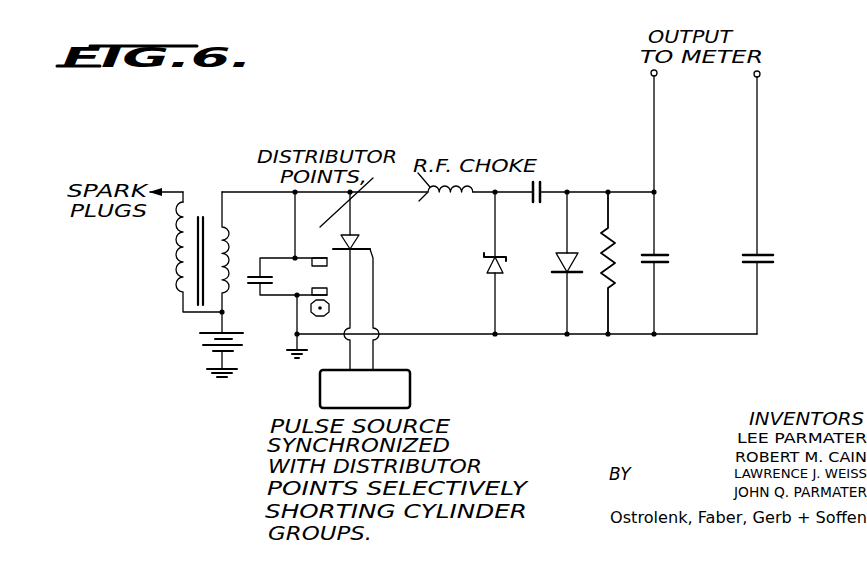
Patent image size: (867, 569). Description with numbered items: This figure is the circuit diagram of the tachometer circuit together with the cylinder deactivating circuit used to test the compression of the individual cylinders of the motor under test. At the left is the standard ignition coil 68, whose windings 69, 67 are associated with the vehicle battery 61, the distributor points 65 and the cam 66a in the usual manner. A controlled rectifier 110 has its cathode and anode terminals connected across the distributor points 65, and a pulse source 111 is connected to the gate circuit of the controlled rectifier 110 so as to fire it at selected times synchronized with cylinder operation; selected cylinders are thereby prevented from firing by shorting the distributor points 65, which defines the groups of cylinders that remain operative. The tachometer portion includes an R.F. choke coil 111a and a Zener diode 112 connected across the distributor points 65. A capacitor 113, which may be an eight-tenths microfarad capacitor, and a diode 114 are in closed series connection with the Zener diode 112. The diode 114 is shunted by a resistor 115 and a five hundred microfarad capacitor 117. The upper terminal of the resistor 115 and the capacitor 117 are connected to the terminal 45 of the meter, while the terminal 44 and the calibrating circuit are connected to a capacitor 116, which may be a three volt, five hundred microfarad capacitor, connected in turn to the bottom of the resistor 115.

The terminal 44 is at (763, 75).
The terminal 45 is at (650, 75).
The vehicle battery 61 is at (203, 341).
The distributor points 65 is at (333, 277).
The cam 66a is at (322, 318).
The secondary winding 67 is at (232, 255).
The ignition coil 68 is at (215, 155).
The primary winding 69 is at (175, 268).
The controlled rectifier 110 is at (363, 240).
The pulse source 111 is at (410, 392).
The R.F. choke coil 111a is at (440, 205).
The Zener diode 112 is at (488, 268).
The capacitor 113 is at (529, 200).
The diode 114 is at (553, 265).
The resistor 115 is at (622, 247).
The capacitor 116 is at (778, 258).
The capacitor 117 is at (668, 258).